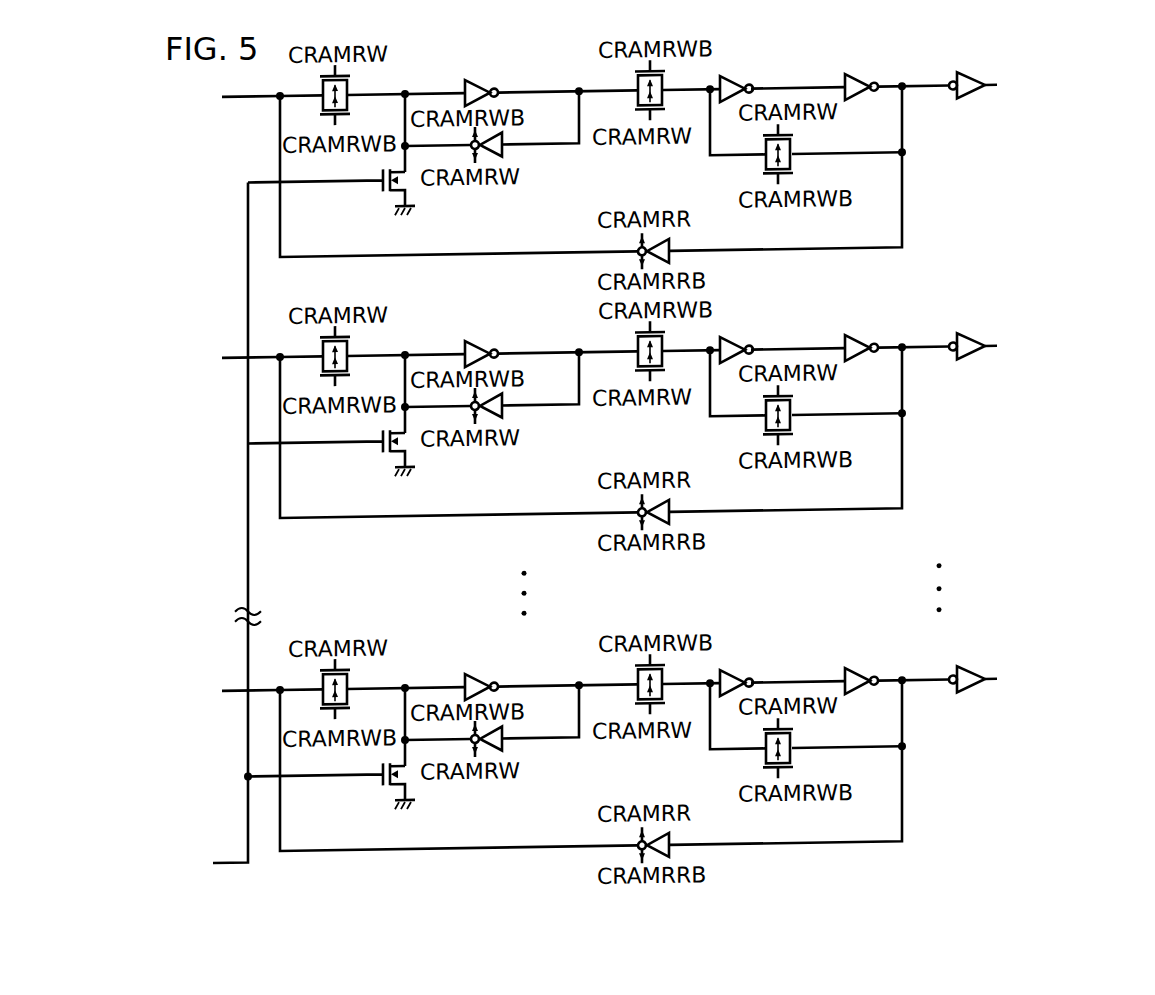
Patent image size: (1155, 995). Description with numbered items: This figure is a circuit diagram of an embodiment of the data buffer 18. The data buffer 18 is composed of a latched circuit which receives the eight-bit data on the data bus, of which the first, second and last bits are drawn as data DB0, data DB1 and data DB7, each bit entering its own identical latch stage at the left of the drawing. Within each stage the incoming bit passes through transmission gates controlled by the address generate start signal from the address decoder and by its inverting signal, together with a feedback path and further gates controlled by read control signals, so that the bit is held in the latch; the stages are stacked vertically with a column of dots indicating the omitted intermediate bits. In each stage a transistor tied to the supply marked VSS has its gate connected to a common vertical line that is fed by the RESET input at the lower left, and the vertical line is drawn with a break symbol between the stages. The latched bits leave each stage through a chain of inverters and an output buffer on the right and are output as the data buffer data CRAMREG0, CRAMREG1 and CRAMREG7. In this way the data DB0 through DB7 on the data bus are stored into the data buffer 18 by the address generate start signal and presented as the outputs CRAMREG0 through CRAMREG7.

The data buffer 18 is at (778, 71).
The data DB0 is at (223, 97).
The data DB1 is at (223, 358).
The data DB7 is at (223, 691).
The reset signal line RESET is at (198, 528).
The ground potential VSS is at (403, 524).
The data buffer data CRAMREG0 is at (1037, 86).
The data buffer data CRAMREG1 is at (1037, 347).
The data buffer data CRAMREG7 is at (1037, 680).